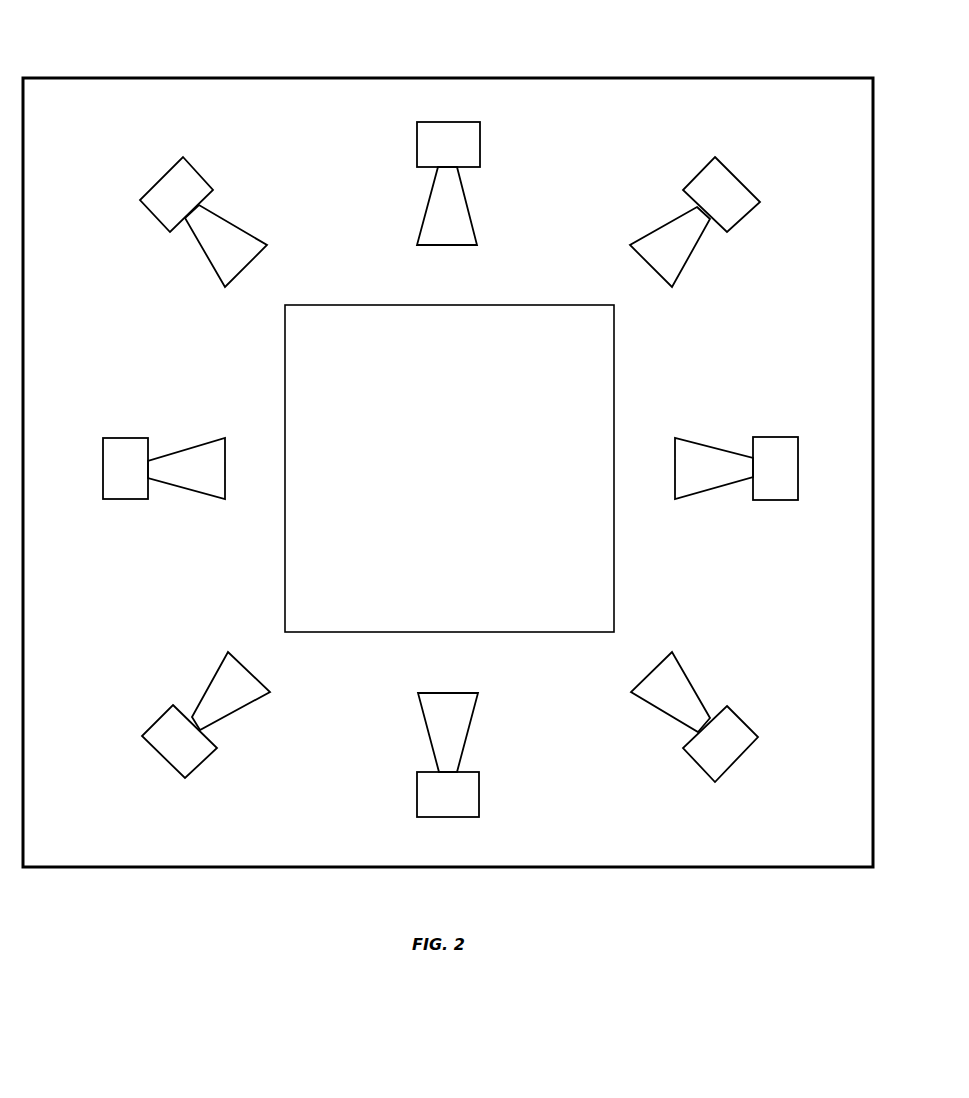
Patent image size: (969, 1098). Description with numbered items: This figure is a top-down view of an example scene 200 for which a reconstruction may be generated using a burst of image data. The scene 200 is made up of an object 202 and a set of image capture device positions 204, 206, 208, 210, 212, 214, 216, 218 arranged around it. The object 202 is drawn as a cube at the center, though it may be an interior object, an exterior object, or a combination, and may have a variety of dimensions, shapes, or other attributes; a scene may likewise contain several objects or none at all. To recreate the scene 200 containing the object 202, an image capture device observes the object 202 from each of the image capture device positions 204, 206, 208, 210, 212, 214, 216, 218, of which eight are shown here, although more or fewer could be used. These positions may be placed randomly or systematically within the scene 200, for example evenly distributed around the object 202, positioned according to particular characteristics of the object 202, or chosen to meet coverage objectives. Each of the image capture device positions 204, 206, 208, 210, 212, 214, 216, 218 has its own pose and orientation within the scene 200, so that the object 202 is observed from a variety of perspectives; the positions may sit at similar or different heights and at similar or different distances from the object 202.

The scene 200 is at (58, 62).
The object 202 is at (650, 344).
The image capture device position 204 is at (385, 167).
The image capture device position 206 is at (660, 188).
The image capture device position 208 is at (763, 410).
The image capture device position 210 is at (755, 700).
The image capture device position 212 is at (505, 788).
The image capture device position 214 is at (232, 780).
The image capture device position 216 is at (131, 521).
The image capture device position 218 is at (140, 254).